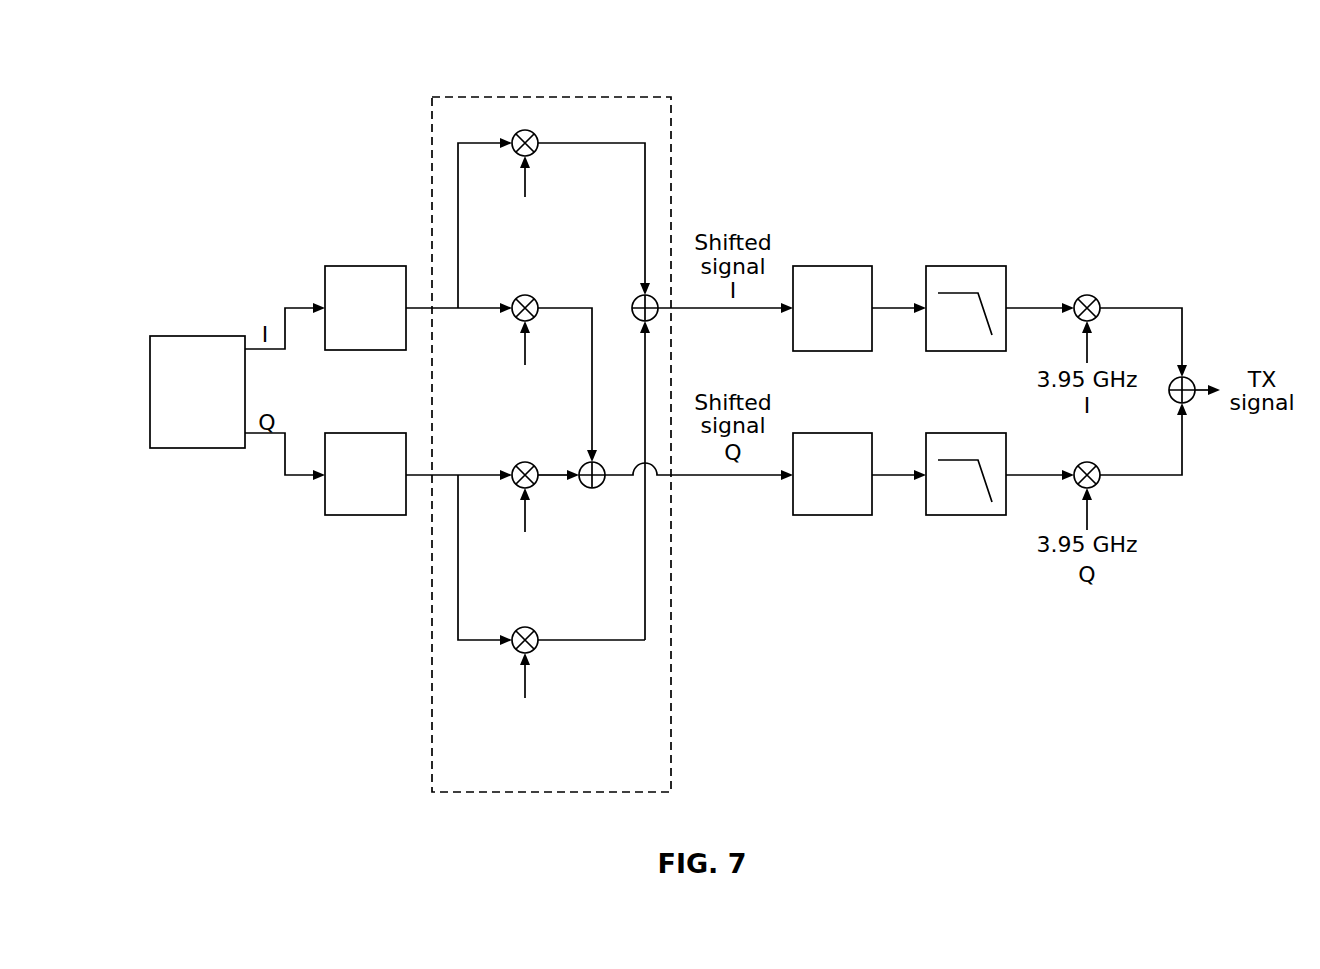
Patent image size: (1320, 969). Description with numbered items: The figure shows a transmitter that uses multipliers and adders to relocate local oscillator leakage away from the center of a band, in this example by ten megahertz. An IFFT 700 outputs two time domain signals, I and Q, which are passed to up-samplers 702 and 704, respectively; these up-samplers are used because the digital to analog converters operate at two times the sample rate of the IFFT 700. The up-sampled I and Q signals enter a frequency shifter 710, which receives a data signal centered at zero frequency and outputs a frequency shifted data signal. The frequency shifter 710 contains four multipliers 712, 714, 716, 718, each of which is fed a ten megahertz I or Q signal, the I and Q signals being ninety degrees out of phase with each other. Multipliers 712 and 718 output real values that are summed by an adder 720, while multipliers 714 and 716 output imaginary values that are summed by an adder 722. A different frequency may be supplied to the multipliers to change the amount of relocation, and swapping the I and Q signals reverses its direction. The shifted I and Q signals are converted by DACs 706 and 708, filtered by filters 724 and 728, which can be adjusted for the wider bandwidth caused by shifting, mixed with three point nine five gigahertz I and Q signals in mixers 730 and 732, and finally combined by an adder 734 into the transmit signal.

The IFFT 700 is at (199, 336).
The up-sampler 702 is at (365, 266).
The up-sampler 704 is at (365, 433).
The Digital to Analog Converter 706 is at (832, 266).
The Digital to Analog Converter 708 is at (832, 433).
The frequency shifter 710 is at (548, 97).
The multiplier 712 is at (527, 130).
The multiplier 714 is at (526, 295).
The multiplier 716 is at (527, 462).
The multiplier 718 is at (527, 627).
The adder 720 is at (641, 295).
The adder 722 is at (598, 487).
The filter 724 is at (965, 266).
The filter 728 is at (965, 433).
The mixer 730 is at (1091, 293).
The mixer 732 is at (1091, 460).
The adder 734 is at (1188, 377).